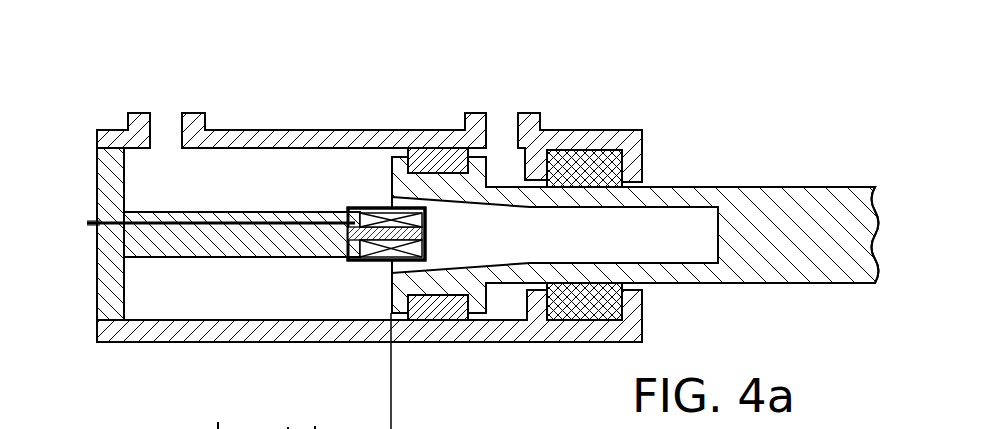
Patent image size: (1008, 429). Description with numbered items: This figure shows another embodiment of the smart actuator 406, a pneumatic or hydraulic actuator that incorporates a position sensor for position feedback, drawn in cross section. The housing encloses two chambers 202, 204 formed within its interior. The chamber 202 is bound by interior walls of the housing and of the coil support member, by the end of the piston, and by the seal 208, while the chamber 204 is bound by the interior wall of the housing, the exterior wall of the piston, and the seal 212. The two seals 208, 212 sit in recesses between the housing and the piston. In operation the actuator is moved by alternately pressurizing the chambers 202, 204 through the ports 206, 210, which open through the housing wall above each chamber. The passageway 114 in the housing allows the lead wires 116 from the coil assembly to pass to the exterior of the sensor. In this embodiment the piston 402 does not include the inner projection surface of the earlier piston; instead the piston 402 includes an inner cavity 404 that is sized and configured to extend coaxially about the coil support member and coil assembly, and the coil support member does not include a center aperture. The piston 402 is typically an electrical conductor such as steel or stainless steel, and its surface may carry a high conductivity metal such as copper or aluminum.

The optical connector assembly 406 is at (453, 219).
The chamber 202 is at (272, 302).
The chamber 204 is at (505, 300).
The port 206 is at (164, 112).
The seal 208 is at (433, 158).
The port 210 is at (503, 110).
The seal 212 is at (584, 170).
The passageway 114 is at (222, 213).
The lead wires 116 is at (87, 224).
The piston 402 is at (792, 255).
The inner cavity 404 is at (580, 245).